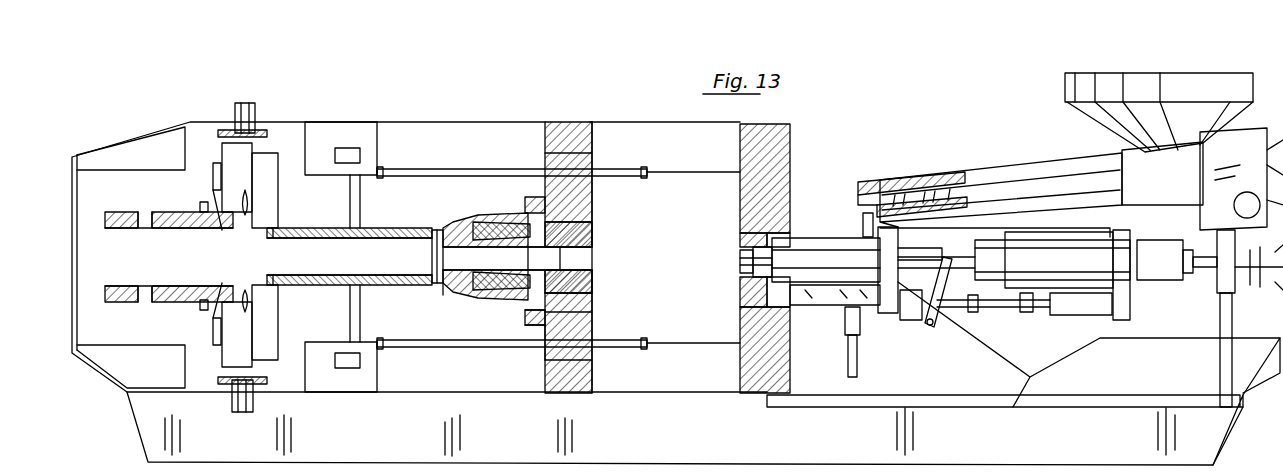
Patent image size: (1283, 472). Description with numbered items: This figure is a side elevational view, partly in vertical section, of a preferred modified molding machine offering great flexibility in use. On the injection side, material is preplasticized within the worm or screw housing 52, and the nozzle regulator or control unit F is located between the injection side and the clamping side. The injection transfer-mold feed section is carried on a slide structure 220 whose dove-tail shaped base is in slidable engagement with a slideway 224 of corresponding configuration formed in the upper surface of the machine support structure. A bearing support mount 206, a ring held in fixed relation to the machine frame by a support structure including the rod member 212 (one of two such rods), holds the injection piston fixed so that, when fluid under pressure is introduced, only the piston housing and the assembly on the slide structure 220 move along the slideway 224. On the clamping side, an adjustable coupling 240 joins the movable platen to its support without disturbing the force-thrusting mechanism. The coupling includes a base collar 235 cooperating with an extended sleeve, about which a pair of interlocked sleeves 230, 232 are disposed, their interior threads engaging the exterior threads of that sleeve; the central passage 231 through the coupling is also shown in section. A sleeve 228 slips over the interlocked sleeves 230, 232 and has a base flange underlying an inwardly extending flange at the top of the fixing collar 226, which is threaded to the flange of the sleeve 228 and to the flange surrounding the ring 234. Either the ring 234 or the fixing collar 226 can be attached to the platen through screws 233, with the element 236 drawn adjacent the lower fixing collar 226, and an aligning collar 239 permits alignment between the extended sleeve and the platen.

The worm or screw housing 52 is at (873, 176).
The bearing support mount 206 is at (1228, 305).
The rod member 212 is at (1226, 361).
The slide structure 220 is at (1089, 344).
The slideway 224 is at (928, 400).
The fixing collar 226 is at (535, 197).
The sleeve 228 is at (499, 215).
The interlocked sleeve 230 is at (463, 218).
The bore 231 is at (471, 251).
The interlocked sleeve 232 is at (592, 226).
The screws 233 is at (542, 337).
The ring 234 is at (585, 293).
The base collar 235 is at (432, 244).
The clamp 236 is at (525, 318).
The aligning collar 239 is at (565, 241).
The adjustable coupling 240 is at (441, 303).
The nozzle regulator or control unit F is at (730, 238).